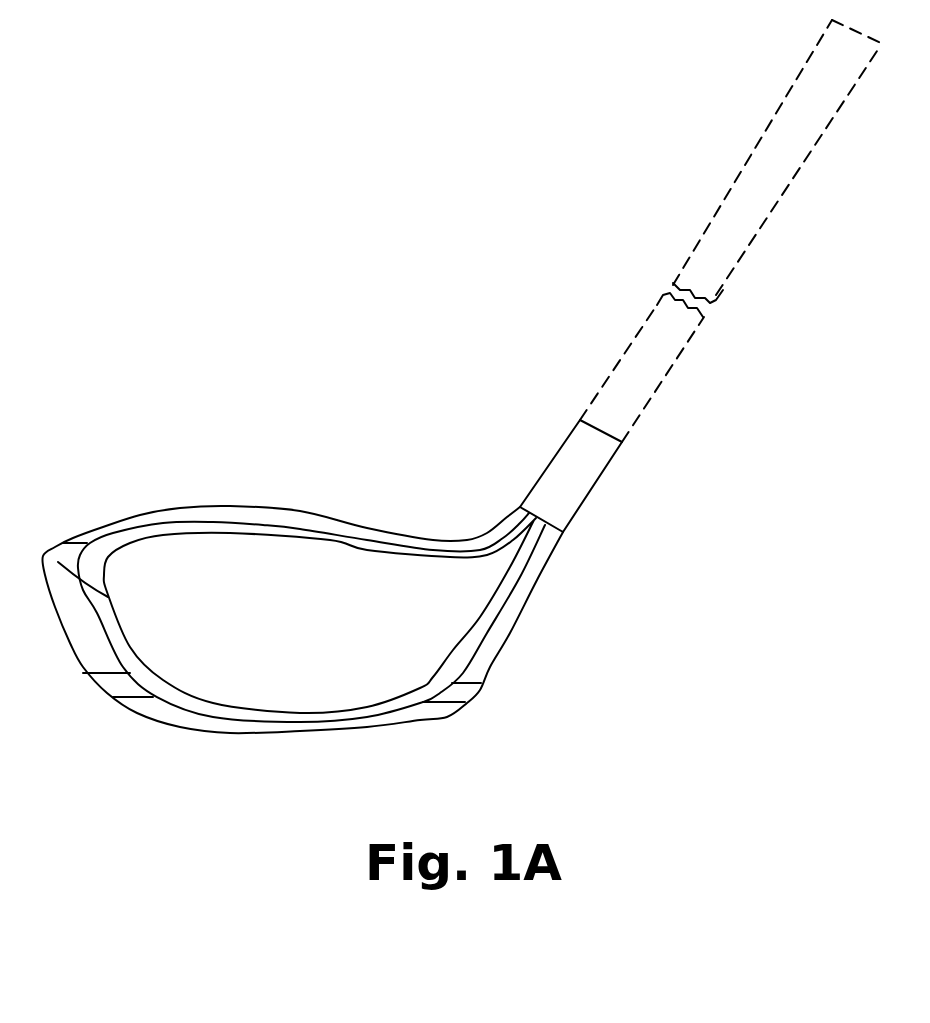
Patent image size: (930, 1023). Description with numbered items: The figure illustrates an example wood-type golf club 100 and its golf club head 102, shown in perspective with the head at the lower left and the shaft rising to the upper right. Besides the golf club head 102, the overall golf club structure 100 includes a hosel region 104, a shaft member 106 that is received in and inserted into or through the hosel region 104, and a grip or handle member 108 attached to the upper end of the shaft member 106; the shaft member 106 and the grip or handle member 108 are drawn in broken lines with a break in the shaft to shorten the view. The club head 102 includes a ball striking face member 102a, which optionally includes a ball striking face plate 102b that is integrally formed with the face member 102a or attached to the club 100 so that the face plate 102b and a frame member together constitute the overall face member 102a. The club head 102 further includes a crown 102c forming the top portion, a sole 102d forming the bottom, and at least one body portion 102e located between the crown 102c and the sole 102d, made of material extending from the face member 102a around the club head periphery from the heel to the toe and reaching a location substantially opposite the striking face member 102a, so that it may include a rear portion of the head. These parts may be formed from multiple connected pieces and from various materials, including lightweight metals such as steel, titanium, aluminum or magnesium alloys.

The wood-type golf club 100 is at (461, 394).
The golf club head 102 is at (302, 589).
The ball striking face member 102a is at (307, 596).
The ball striking face plate 102b is at (424, 614).
The crown 102c is at (302, 602).
The sole 102d is at (282, 721).
The body portion 102e is at (133, 578).
The hosel region 104 is at (549, 474).
The shaft member 106 is at (689, 367).
The grip or handle member 108 is at (777, 161).